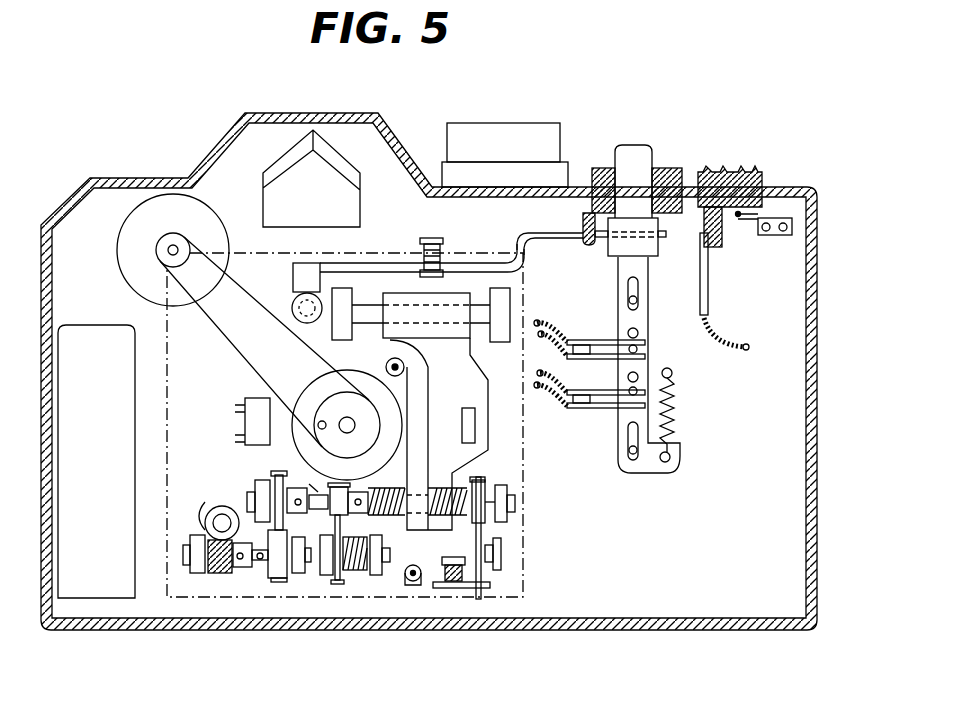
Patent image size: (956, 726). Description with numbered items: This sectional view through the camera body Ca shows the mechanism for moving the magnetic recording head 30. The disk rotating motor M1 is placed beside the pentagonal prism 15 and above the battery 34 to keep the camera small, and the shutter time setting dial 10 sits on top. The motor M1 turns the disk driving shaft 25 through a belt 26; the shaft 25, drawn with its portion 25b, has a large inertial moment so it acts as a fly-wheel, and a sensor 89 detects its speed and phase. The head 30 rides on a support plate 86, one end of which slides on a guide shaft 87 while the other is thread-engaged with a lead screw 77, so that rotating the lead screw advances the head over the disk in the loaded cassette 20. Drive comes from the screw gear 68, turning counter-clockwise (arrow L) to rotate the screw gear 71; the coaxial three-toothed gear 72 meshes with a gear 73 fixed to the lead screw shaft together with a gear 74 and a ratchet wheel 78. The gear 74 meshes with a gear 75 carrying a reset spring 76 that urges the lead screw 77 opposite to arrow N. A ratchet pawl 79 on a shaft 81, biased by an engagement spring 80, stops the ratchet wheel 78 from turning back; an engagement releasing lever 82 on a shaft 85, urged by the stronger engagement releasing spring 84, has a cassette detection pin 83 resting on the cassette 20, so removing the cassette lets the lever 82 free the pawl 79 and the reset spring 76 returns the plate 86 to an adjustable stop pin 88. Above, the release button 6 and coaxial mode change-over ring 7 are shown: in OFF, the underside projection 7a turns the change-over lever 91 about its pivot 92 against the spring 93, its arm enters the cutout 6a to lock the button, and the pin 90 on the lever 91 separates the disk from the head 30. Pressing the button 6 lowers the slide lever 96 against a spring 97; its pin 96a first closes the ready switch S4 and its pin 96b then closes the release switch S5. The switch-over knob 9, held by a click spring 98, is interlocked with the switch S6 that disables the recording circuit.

The camera body Ca is at (817, 452).
The shutter time setting dial 10 is at (528, 136).
The pentagonal prism 15 is at (270, 194).
The disk rotating motor M1 is at (147, 222).
The cassette 20 is at (523, 583).
The battery 34 is at (90, 353).
The belt 26 is at (221, 335).
The disk driving shaft 25 is at (340, 393).
The pulley pin 25b is at (318, 421).
The pin 90 is at (297, 299).
The spring 93 is at (466, 262).
The change-over lever 91 is at (524, 232).
The pivot 92 is at (428, 238).
The guide shaft 87 is at (367, 318).
The stop pin 88 is at (404, 366).
The support plate 86 is at (472, 393).
The magnetic head 30 is at (475, 426).
The sensor 89 is at (245, 418).
The screw gear 68 is at (222, 506).
The arrow L is at (194, 508).
The gear 73 is at (277, 474).
The arrow N is at (306, 476).
The screw gear 71 is at (222, 576).
The three-toothed gear 72 is at (279, 578).
The gear 74 is at (348, 488).
The gear 75 is at (338, 584).
The reset spring 76 is at (362, 573).
The lead screw 77 is at (400, 492).
The ratchet wheel 78 is at (480, 480).
The ratchet pawl 79 is at (494, 528).
The engagement spring 80 is at (501, 541).
The shaft 81 is at (467, 557).
The cassette detection pin 83 is at (411, 584).
The engagement releasing spring 84 is at (474, 590).
The engagement releasing lever 82 is at (448, 592).
The shaft 85 is at (457, 598).
The release button 6 is at (639, 156).
The mode change-over ring 7 is at (673, 166).
The underside projection 7a is at (593, 246).
The cutout 6a is at (659, 234).
The switch-over knob 9 is at (742, 170).
The click spring 98 is at (739, 219).
The switch S6 is at (711, 284).
The slide lever 96 is at (641, 320).
The pin 96a is at (640, 335).
The pin 96b is at (627, 378).
The ready switch S4 is at (602, 341).
The release switch S5 is at (600, 405).
The spring 97 is at (677, 404).